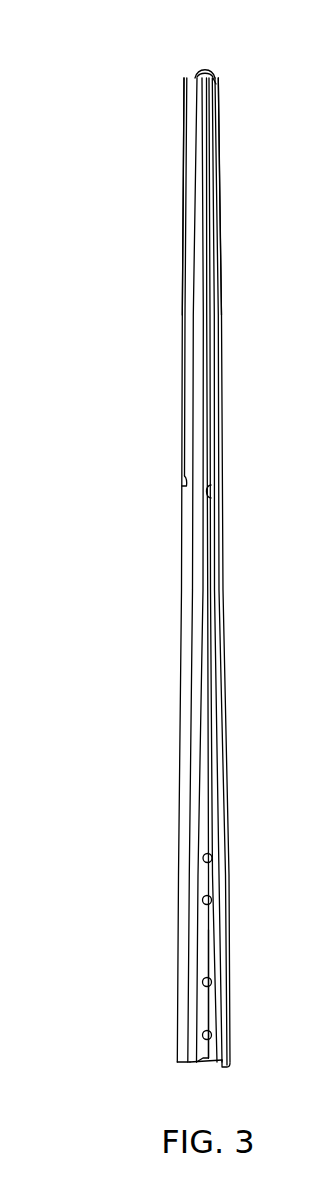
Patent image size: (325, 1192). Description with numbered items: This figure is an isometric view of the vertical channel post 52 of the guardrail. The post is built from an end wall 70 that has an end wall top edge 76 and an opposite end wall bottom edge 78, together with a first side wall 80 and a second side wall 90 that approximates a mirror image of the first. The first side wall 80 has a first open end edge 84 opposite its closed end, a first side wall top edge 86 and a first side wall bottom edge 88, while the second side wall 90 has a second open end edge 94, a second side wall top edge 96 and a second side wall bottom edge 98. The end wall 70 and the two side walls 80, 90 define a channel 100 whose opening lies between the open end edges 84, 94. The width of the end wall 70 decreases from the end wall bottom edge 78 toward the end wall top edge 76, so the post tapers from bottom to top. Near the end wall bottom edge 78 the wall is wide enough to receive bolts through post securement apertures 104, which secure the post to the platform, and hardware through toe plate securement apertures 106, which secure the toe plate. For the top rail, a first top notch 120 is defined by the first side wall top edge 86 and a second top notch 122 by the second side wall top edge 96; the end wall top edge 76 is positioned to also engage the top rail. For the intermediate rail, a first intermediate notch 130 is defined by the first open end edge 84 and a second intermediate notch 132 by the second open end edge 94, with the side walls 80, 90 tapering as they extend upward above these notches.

The vertical channel post 52 is at (150, 131).
The end wall 70 is at (209, 1054).
The end wall top edge 76 is at (206, 67).
The end wall bottom edge 78 is at (200, 1063).
The first side wall 80 is at (193, 588).
The first open end edge 84 is at (188, 268).
The first side wall top edge 86 is at (196, 76).
The first side wall bottom edge 88 is at (181, 1062).
The second side wall 90 is at (221, 588).
The second open end edge 94 is at (204, 315).
The second side wall top edge 96 is at (216, 76).
The second side wall bottom edge 98 is at (228, 1067).
The channel 100 is at (207, 951).
The post securement apertures 104 is at (208, 1033).
The toe plate securement apertures 106 is at (209, 899).
The first top notch 120 is at (183, 196).
The second top notch 122 is at (219, 196).
The first intermediate notch 130 is at (182, 482).
The second intermediate notch 132 is at (214, 491).